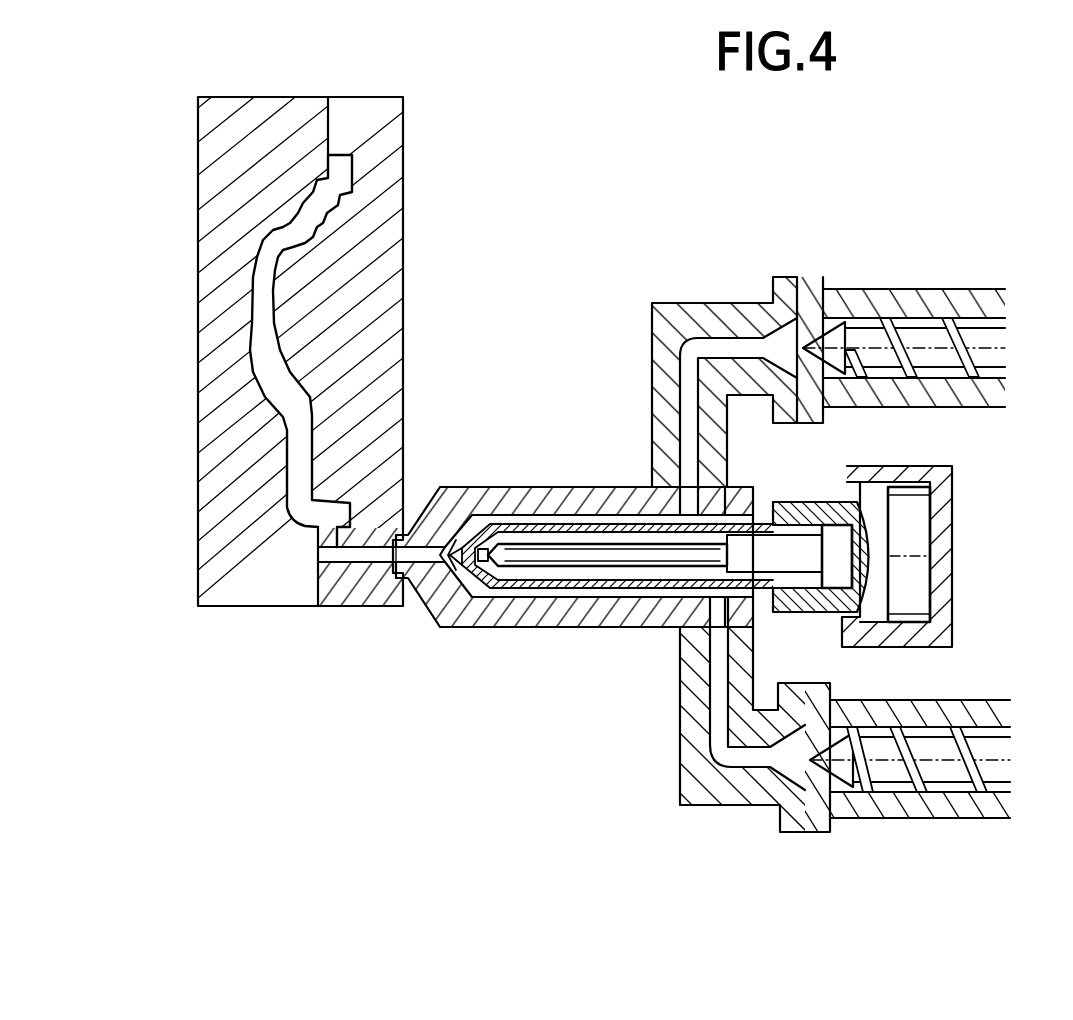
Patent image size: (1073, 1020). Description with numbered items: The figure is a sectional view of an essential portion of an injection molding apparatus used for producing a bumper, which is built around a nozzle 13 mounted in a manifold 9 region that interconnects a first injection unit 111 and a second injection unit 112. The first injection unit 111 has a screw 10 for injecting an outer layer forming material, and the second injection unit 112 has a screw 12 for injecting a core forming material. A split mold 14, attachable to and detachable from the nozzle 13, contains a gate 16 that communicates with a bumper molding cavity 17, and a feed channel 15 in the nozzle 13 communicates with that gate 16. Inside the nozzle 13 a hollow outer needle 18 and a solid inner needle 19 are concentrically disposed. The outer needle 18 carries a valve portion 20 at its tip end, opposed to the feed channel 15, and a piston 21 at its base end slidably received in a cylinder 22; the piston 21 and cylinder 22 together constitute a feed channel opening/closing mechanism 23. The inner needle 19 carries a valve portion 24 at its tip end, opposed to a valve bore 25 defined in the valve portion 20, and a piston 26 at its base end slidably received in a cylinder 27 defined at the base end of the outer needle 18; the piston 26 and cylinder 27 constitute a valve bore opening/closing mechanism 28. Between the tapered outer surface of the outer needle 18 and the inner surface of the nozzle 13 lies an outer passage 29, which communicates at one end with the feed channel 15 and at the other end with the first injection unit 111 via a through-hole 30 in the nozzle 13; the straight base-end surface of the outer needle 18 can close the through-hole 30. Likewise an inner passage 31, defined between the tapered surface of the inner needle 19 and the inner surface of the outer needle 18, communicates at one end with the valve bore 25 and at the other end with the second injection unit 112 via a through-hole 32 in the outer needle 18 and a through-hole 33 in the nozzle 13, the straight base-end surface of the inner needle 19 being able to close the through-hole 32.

The hot runner manifold 9 is at (680, 292).
The screw 10 is at (860, 330).
The first injection unit 111 is at (942, 290).
The second injection unit 112 is at (962, 697).
The screw 12 is at (870, 745).
The nozzle 13 is at (522, 487).
The split mold 14 is at (210, 157).
The feed channel 15 is at (412, 580).
The gate 16 is at (352, 565).
The bumper molding cavity 17 is at (305, 458).
The hollow outer needle 18 is at (556, 527).
The solid inner needle 19 is at (596, 548).
The valve portion 20 is at (466, 590).
The piston 21 is at (918, 553).
The cylinder 22 is at (906, 487).
The feed channel opening/closing mechanism 23 is at (958, 495).
The valve portion 24 is at (490, 548).
The valve bore 25 is at (456, 538).
The piston 26 is at (826, 522).
The cylinder 27 is at (808, 503).
The valve bore opening/closing mechanism 28 is at (822, 618).
The outer passage 29 is at (569, 610).
The through-hole 30 is at (690, 485).
The inner passage 31 is at (507, 585).
The through-hole 32 is at (722, 568).
The through-hole 33 is at (692, 652).